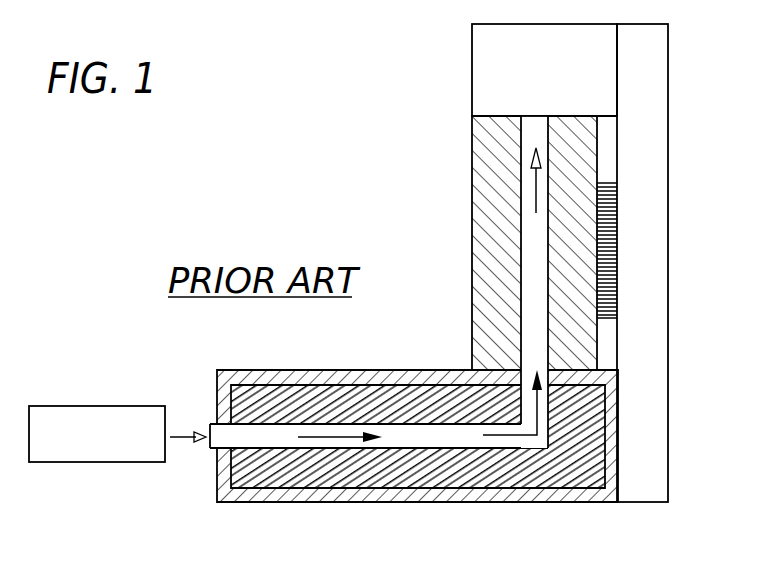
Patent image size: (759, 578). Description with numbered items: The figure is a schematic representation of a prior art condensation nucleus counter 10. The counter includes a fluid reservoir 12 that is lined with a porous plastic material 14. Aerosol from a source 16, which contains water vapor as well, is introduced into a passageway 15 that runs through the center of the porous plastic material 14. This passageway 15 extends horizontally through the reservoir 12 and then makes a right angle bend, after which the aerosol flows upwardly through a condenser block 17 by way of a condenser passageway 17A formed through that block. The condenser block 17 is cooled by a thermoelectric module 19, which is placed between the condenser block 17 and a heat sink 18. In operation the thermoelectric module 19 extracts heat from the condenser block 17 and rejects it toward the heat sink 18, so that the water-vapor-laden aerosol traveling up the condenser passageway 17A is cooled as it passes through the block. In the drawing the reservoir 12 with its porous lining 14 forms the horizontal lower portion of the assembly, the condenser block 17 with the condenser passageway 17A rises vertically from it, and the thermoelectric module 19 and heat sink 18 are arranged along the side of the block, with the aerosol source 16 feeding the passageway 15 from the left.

The condensation nucleus counter 10 is at (422, 94).
The fluid reservoir 12 is at (332, 497).
The porous plastic material 14 is at (283, 475).
The passageway 15 is at (230, 437).
The source 16 is at (123, 403).
The condenser block 17 is at (480, 239).
The condenser passageway 17A is at (532, 298).
The heat sink 18 is at (650, 257).
The thermoelectric module 19 is at (477, 35).